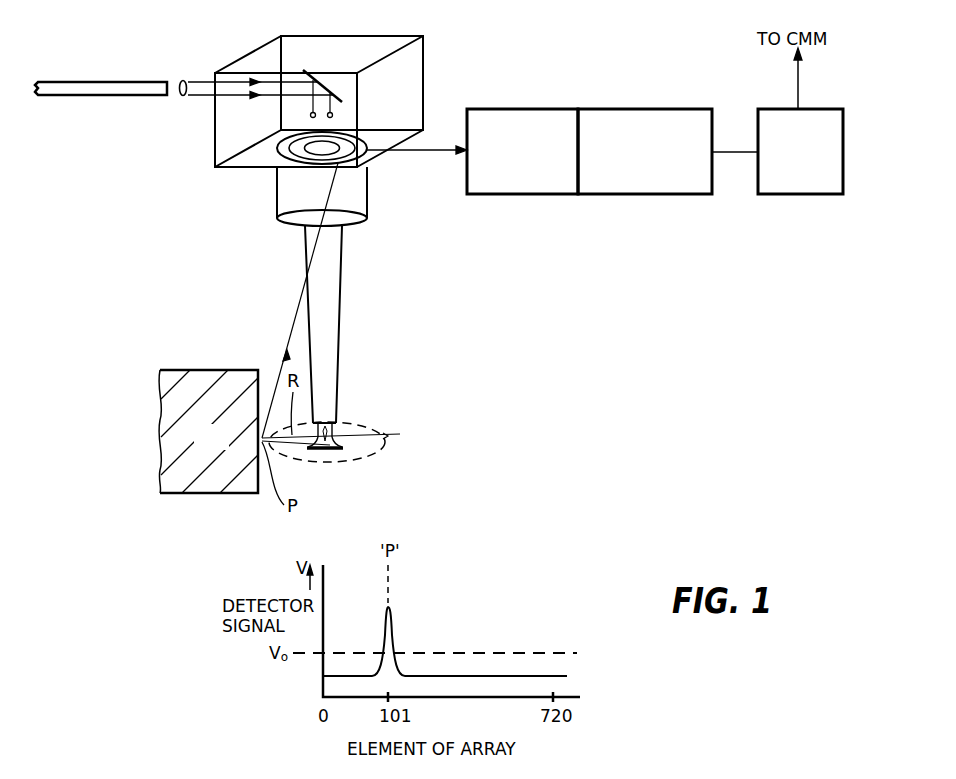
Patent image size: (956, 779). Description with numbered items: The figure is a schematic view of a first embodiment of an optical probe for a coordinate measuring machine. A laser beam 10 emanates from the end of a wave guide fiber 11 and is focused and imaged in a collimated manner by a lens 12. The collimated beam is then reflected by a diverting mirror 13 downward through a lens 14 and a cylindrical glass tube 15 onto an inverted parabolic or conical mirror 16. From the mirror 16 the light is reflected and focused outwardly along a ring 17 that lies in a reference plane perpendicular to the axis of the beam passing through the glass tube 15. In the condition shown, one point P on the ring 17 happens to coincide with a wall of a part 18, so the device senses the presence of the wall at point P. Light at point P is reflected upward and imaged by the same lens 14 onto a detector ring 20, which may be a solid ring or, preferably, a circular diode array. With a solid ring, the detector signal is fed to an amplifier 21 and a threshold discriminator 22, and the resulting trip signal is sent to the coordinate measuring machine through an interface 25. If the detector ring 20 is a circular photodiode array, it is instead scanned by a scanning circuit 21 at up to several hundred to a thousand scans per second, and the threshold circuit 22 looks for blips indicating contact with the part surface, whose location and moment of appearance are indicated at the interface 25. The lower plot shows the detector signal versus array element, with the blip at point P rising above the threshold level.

The laser beam 10 is at (203, 96).
The wave guide fiber 11 is at (92, 87).
The lens 12 is at (182, 97).
The diverting mirror 13 is at (324, 87).
The lens 14 is at (366, 211).
The cylindrical glass tube 15 is at (338, 308).
The inverted parabolic or conical mirror 16 is at (350, 440).
The ring 17 is at (367, 423).
The part 18 is at (227, 447).
The detector ring 20 is at (278, 148).
The amplifier or scanning circuit 21 is at (540, 187).
The threshold discriminator 22 is at (650, 185).
The interface 25 is at (789, 184).